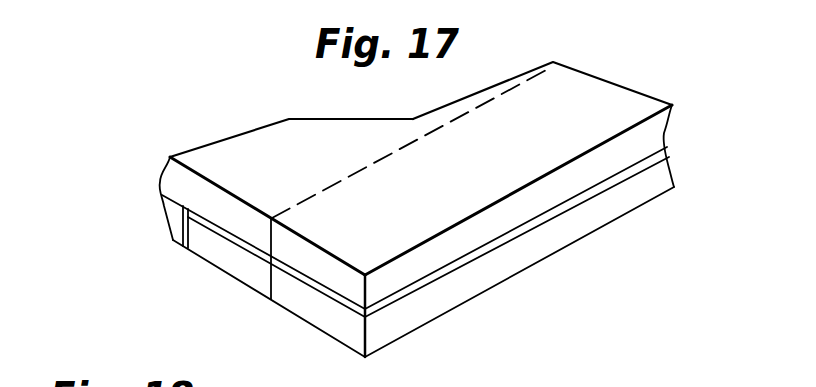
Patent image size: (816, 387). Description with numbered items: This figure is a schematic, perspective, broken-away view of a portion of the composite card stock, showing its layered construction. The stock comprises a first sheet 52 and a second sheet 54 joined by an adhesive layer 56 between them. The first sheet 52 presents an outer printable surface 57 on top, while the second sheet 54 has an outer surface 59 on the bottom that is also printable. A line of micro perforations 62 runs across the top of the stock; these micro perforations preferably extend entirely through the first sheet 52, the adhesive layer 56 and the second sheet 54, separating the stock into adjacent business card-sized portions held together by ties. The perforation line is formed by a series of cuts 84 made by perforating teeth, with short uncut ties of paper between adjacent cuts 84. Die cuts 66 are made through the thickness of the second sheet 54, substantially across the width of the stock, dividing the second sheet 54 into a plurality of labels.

The first sheet 52 is at (177, 183).
The second sheet 54 is at (340, 324).
The adhesive layer 56 is at (305, 275).
The outer printable surface 57 is at (626, 98).
The outer surface 59 is at (549, 257).
The micro perforations 62 is at (407, 156).
The die cuts 66 is at (172, 237).
The cuts 84 is at (349, 176).